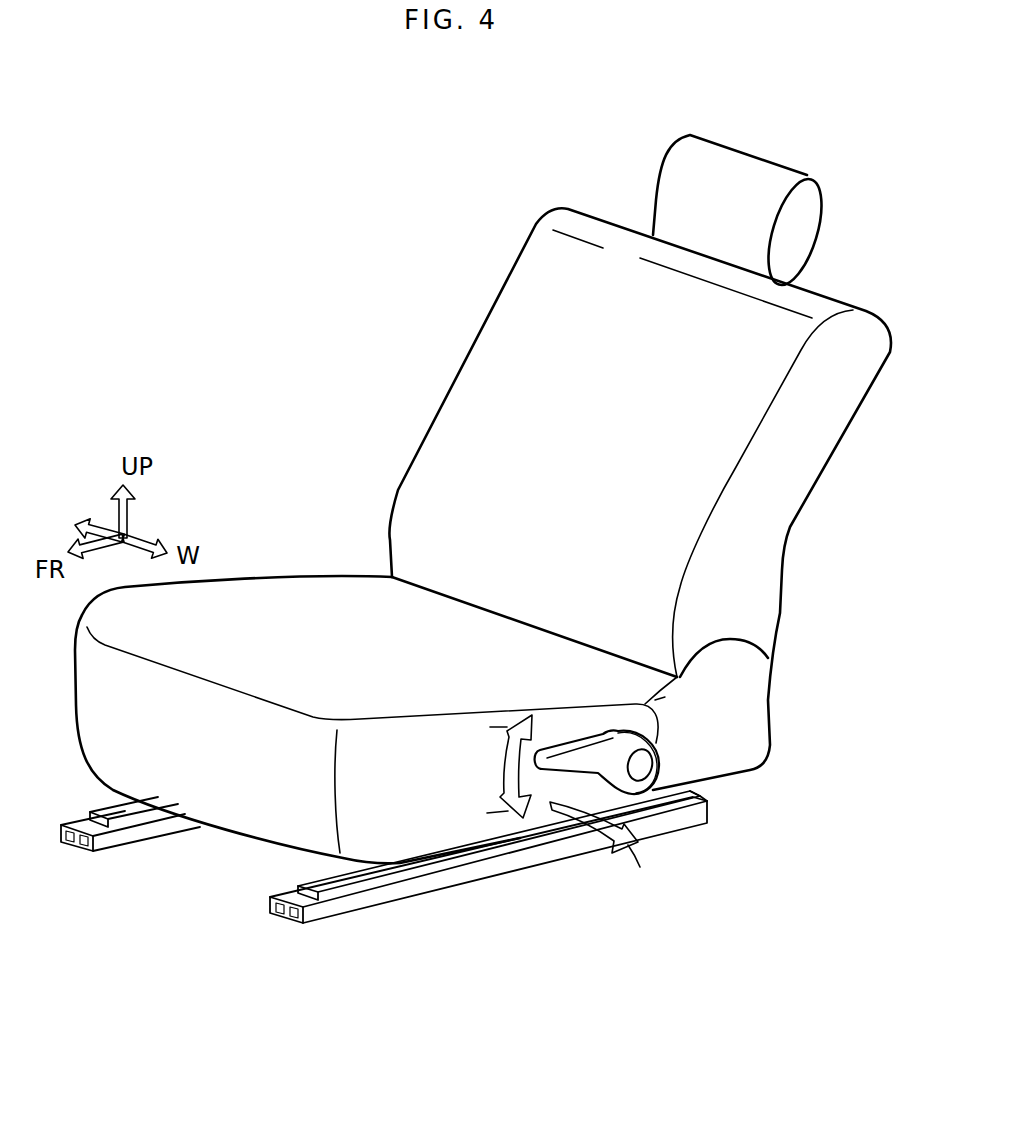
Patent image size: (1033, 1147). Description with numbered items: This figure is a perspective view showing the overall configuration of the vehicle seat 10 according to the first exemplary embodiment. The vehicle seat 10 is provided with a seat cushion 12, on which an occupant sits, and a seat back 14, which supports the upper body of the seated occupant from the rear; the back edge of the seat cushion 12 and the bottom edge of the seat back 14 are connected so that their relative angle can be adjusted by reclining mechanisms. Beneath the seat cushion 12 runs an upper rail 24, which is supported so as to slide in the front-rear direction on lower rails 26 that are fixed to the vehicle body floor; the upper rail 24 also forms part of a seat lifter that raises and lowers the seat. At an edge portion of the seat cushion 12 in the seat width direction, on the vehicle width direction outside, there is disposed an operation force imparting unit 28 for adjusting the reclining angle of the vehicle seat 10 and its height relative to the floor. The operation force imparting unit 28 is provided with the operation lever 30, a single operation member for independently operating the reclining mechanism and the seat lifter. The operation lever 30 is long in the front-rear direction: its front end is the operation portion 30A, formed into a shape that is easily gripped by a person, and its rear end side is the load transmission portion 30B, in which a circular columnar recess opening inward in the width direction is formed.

The vehicle seat 10 is at (523, 116).
The seat cushion 12 is at (288, 600).
The seat back 14 is at (483, 370).
The upper rail 24 is at (123, 820).
The lower rail 26 is at (177, 820).
The operation force imparting unit 28 is at (673, 766).
The operation lever 30 is at (449, 612).
The operation portion 30A is at (560, 753).
The load transmission portion 30B is at (660, 697).